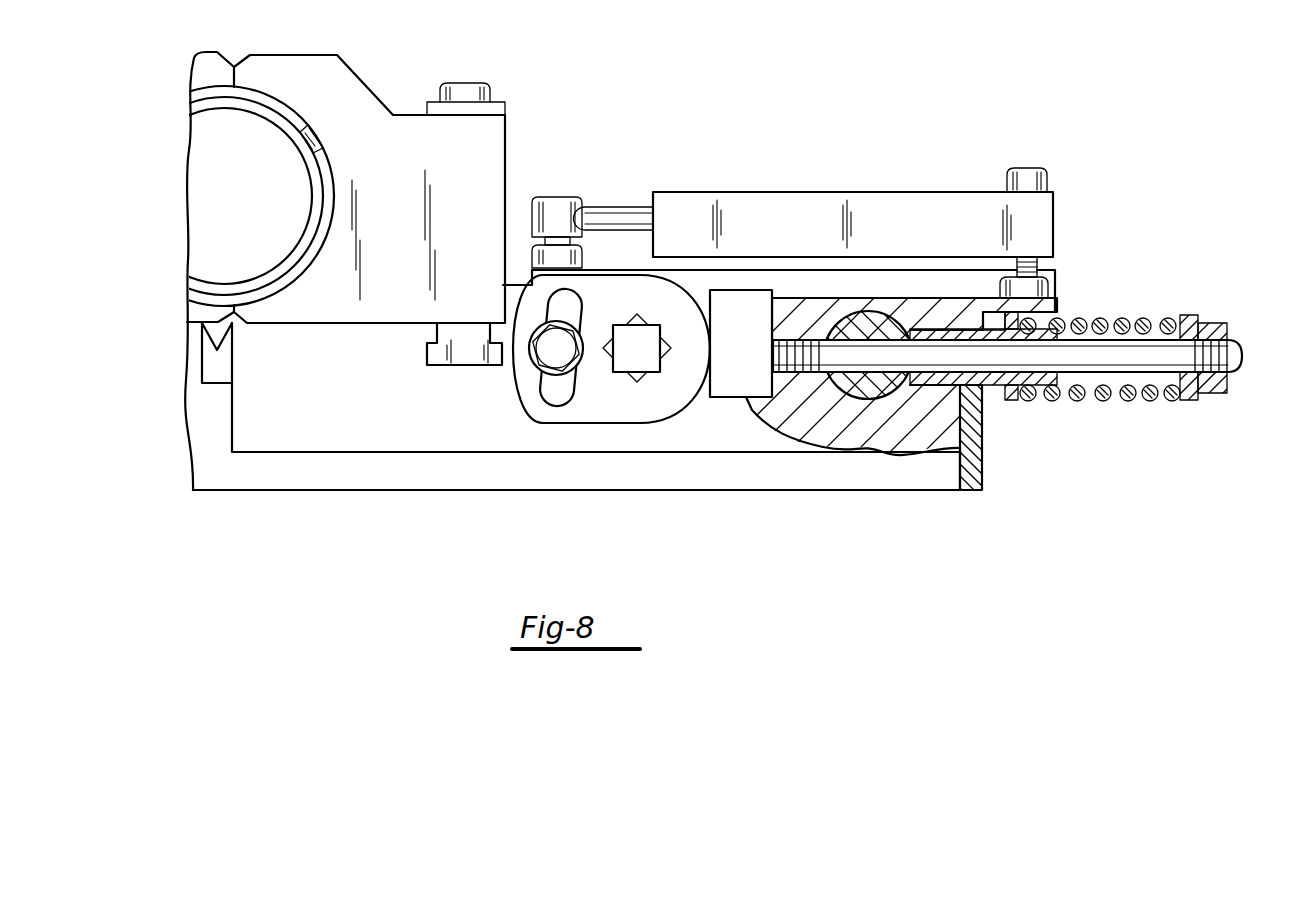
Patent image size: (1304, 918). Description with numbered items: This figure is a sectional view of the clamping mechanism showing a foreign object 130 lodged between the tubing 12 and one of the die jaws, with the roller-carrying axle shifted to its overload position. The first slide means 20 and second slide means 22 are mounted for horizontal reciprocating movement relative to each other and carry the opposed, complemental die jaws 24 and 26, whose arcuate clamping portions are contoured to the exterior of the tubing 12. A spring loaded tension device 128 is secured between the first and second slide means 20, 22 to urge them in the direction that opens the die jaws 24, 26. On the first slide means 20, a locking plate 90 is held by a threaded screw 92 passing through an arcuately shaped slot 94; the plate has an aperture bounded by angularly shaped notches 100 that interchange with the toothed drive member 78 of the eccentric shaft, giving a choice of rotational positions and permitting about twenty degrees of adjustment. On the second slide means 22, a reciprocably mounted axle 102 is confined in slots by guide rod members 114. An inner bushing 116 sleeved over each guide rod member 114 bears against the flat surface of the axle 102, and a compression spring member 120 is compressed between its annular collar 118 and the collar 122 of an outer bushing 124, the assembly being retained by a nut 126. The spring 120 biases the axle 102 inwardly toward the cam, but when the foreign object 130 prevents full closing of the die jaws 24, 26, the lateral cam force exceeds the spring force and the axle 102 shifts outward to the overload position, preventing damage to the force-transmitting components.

The tubing 12 is at (302, 243).
The first slide means 20 is at (330, 406).
The second slide means 22 is at (306, 478).
The die jaw 24 is at (208, 66).
The die jaw 26 is at (412, 241).
The toothed drive member 78 is at (624, 336).
The locking plate 90 is at (627, 416).
The threaded screw 92 is at (548, 352).
The arcuately shaped slot 94 is at (557, 392).
The angularly shaped notches 100 is at (640, 316).
The axle 102 is at (877, 323).
The guide rod members 114 is at (1077, 358).
The inner bushing 116 is at (993, 387).
The annular collar 118 is at (1015, 397).
The compression spring member 120 is at (1103, 402).
The collar 122 is at (1193, 400).
The outer bushing 124 is at (1153, 338).
The nut 126 is at (1213, 330).
The spring loaded tension device 128 is at (752, 201).
The foreign object 130 is at (312, 135).